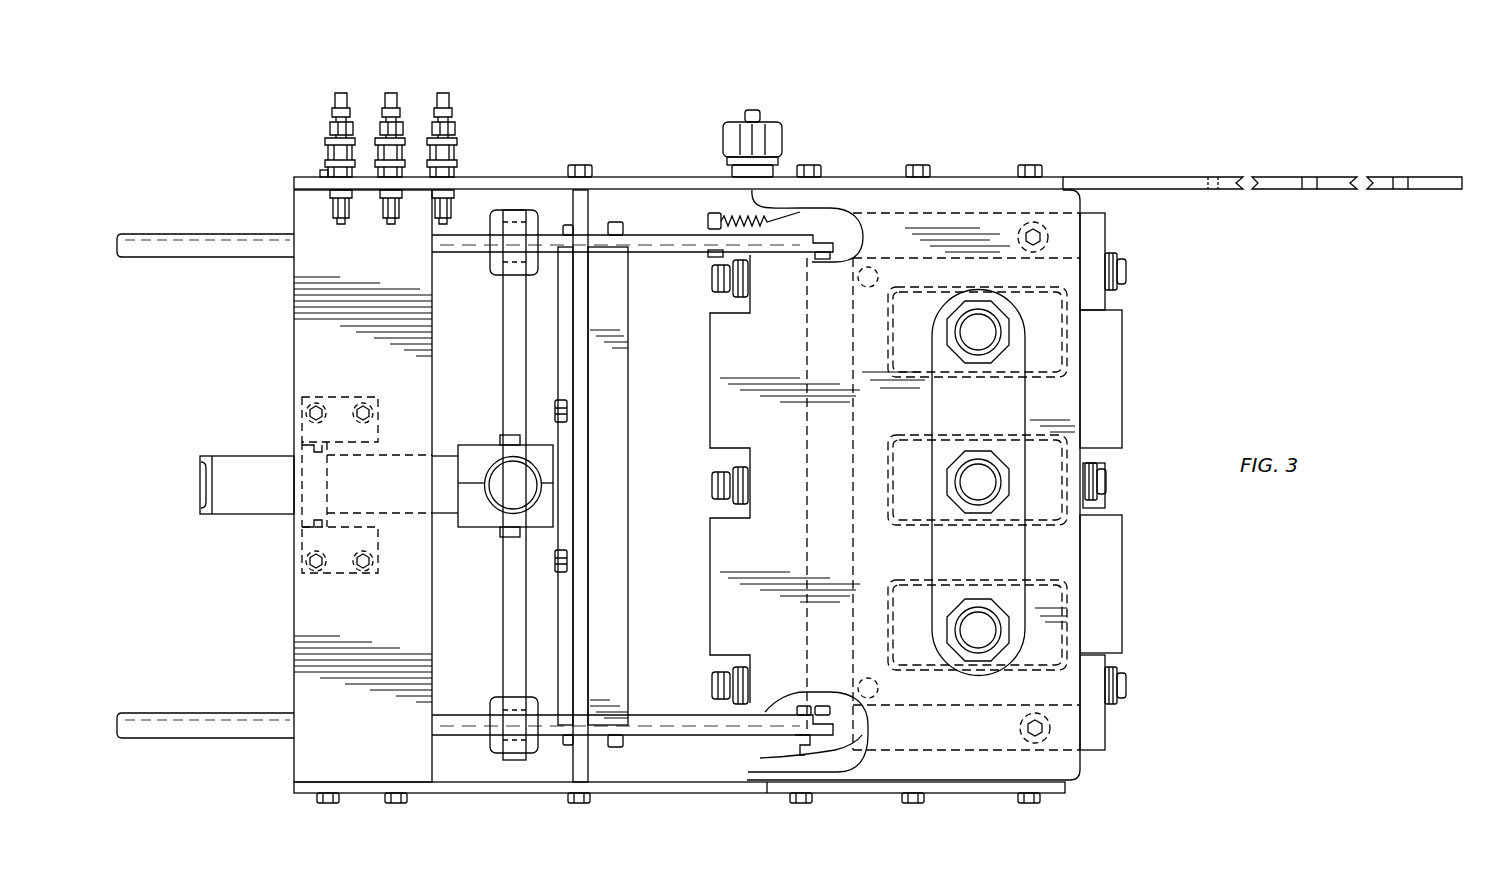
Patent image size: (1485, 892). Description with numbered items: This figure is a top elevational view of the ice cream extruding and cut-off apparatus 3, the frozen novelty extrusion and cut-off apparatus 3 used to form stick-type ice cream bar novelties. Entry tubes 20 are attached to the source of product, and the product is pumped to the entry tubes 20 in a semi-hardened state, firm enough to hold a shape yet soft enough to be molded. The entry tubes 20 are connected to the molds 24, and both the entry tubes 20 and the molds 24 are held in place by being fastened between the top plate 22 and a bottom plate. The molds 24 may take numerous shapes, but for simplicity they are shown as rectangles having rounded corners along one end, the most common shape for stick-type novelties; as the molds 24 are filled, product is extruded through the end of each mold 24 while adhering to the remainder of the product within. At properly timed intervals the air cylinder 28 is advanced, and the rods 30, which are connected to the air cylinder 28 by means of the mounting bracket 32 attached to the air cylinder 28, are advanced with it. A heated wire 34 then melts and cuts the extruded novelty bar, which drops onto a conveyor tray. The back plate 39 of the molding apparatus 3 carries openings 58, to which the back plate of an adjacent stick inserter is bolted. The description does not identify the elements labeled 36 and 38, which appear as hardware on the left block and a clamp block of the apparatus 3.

The frozen novelty extrusion and cut-off apparatus 3 is at (945, 485).
The entry tubes 20 is at (978, 458).
The top plate 22 is at (1106, 420).
The molds 24 is at (1068, 345).
The air cylinder 28 is at (248, 455).
The rods 30 is at (650, 252).
The mounting bracket 32 is at (510, 372).
The heated wire 34 is at (835, 745).
The mounting bolts 36 is at (341, 575).
The clamp block 38 is at (476, 515).
The back plate 39 is at (1150, 177).
The openings 58 is at (1215, 172).